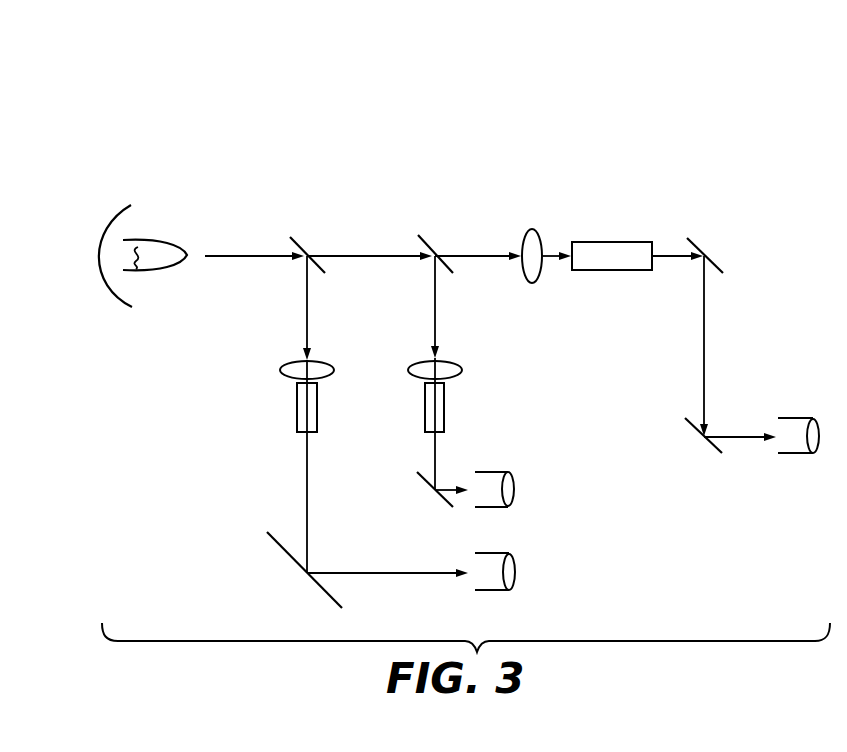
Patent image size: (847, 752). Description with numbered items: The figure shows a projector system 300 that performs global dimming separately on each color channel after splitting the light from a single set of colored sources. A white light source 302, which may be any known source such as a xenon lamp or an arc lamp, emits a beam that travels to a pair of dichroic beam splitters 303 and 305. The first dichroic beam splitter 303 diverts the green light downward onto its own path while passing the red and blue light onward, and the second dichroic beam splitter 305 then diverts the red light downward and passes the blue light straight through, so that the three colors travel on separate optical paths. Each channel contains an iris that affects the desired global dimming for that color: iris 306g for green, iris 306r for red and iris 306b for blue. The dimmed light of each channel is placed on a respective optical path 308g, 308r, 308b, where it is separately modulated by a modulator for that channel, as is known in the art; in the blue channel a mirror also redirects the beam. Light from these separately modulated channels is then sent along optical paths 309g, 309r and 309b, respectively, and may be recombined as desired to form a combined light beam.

The projector system 300 is at (466, 163).
The white light source 302 is at (113, 208).
The dichroic beam splitter 303 is at (297, 248).
The dichroic beam splitter 305 is at (432, 250).
The iris 306b is at (532, 282).
The iris 306g is at (280, 370).
The iris 306r is at (463, 370).
The optical path 308b is at (603, 242).
The optical path 308g is at (297, 417).
The optical path 308r is at (445, 410).
The optical path 309b is at (817, 452).
The optical path 309g is at (517, 575).
The optical path 309r is at (515, 490).